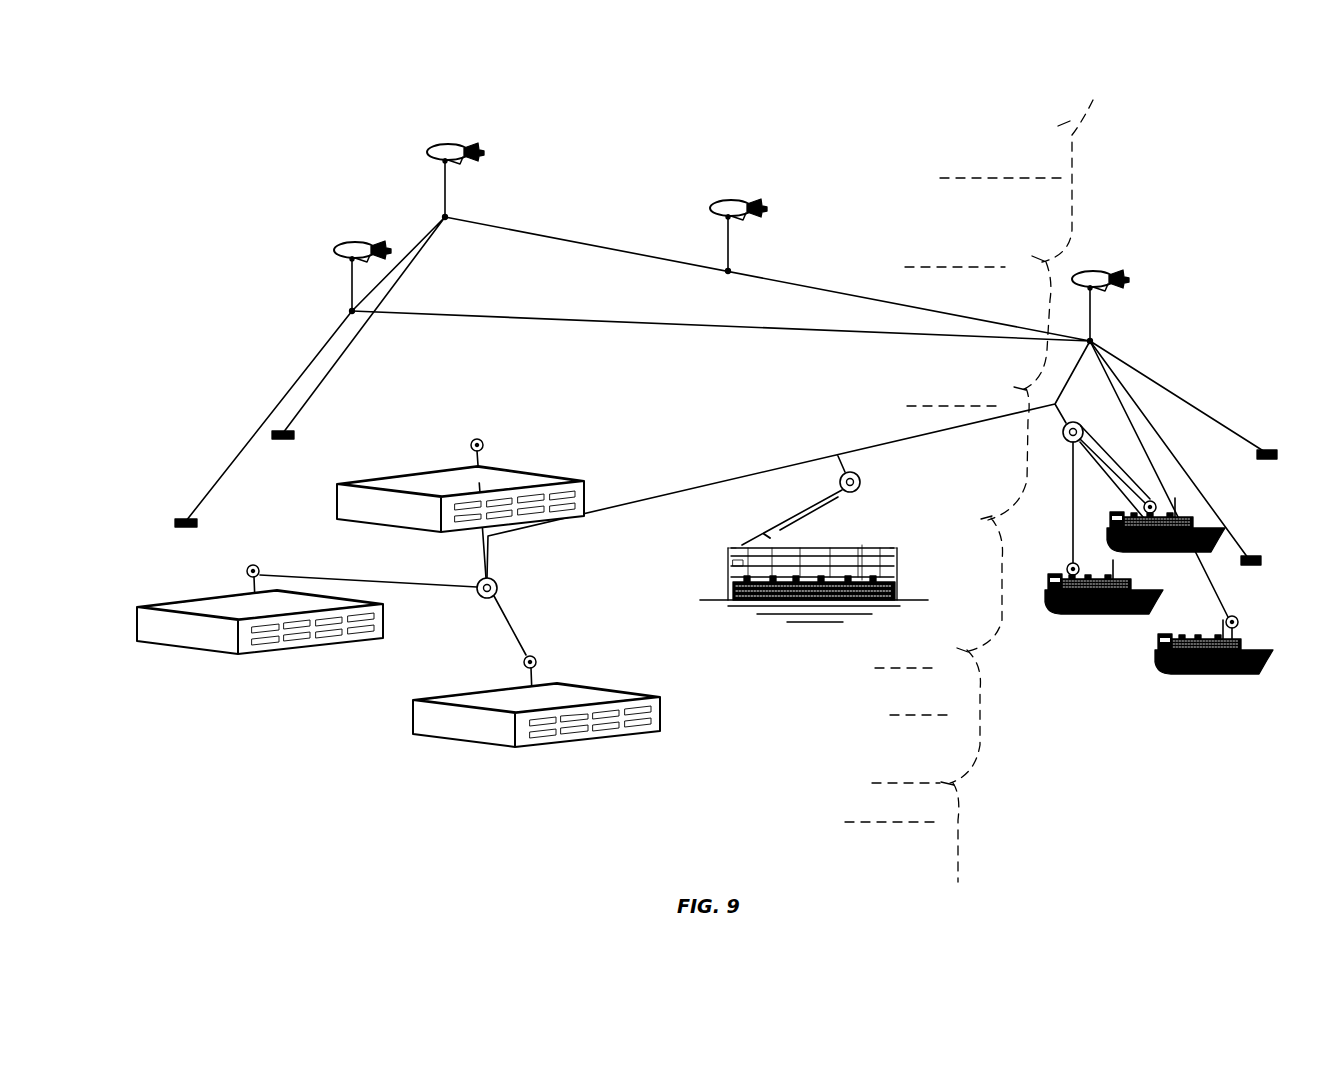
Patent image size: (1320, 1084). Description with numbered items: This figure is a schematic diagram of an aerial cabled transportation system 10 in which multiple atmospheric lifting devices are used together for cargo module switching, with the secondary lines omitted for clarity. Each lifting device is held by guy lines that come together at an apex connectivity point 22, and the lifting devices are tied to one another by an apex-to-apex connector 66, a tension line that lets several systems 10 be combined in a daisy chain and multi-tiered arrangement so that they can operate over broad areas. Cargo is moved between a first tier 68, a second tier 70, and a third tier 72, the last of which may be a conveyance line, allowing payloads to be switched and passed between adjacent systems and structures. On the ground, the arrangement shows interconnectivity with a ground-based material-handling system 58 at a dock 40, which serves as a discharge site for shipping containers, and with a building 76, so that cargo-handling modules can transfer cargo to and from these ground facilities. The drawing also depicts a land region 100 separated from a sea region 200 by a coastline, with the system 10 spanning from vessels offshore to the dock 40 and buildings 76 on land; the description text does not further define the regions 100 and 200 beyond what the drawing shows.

The aerial cabled transportation system 10 is at (812, 143).
The apex connectivity point 22 is at (440, 217).
The dock 40 is at (900, 598).
The ground-based material-handling system 58 is at (742, 545).
The apex-to-apex connector 66 is at (585, 240).
The first tier 68 is at (483, 441).
The second tier 70 is at (497, 584).
The third tier 72 is at (815, 458).
The building 76 is at (435, 482).
The land region 100 is at (950, 860).
The sea region 200 is at (1022, 860).